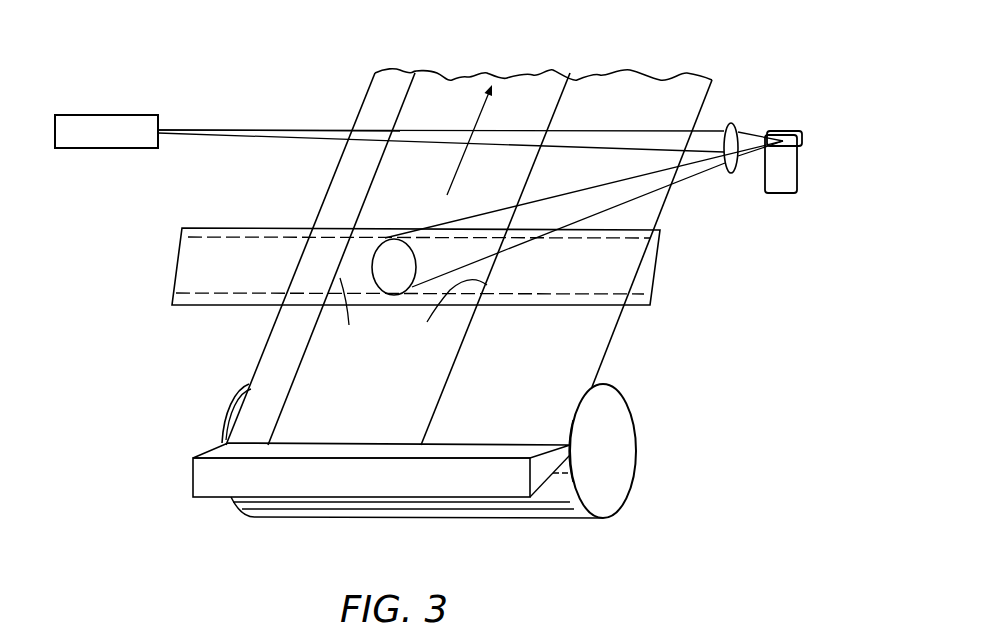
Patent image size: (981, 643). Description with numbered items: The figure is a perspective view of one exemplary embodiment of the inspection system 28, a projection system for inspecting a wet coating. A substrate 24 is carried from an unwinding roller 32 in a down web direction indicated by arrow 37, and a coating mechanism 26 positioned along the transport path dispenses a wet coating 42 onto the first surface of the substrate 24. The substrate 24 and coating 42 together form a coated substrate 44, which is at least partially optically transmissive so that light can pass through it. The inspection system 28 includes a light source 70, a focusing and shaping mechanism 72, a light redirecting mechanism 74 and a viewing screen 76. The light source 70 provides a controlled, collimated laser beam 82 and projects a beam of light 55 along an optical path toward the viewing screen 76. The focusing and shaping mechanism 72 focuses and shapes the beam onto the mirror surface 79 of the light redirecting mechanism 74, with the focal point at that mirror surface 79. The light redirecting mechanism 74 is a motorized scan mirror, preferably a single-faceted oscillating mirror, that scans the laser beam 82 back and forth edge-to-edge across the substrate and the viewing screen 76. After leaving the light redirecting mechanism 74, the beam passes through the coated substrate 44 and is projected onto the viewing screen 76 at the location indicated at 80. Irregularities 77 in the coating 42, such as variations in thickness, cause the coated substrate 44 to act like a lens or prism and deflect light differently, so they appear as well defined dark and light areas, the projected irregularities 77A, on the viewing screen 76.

The light source 70 is at (122, 118).
The inspection system 28 is at (106, 154).
The beam of light 55 is at (297, 123).
The laser beam 82 is at (337, 130).
The irregularities 77 is at (413, 92).
The arrow 37 is at (456, 172).
The focusing and shaping mechanism 72 is at (735, 108).
The mirror surface 79 is at (790, 131).
The light redirecting mechanism 74 is at (814, 132).
The projected beam on viewing screen 80 is at (368, 238).
The viewing screen 76 is at (676, 272).
The projected irregularities 77A is at (406, 317).
The coated substrate 44 is at (612, 352).
The coating 42 is at (551, 390).
The unwinding roller 32 is at (628, 455).
The coating mechanism 26 is at (184, 481).
The substrate 24 is at (562, 507).